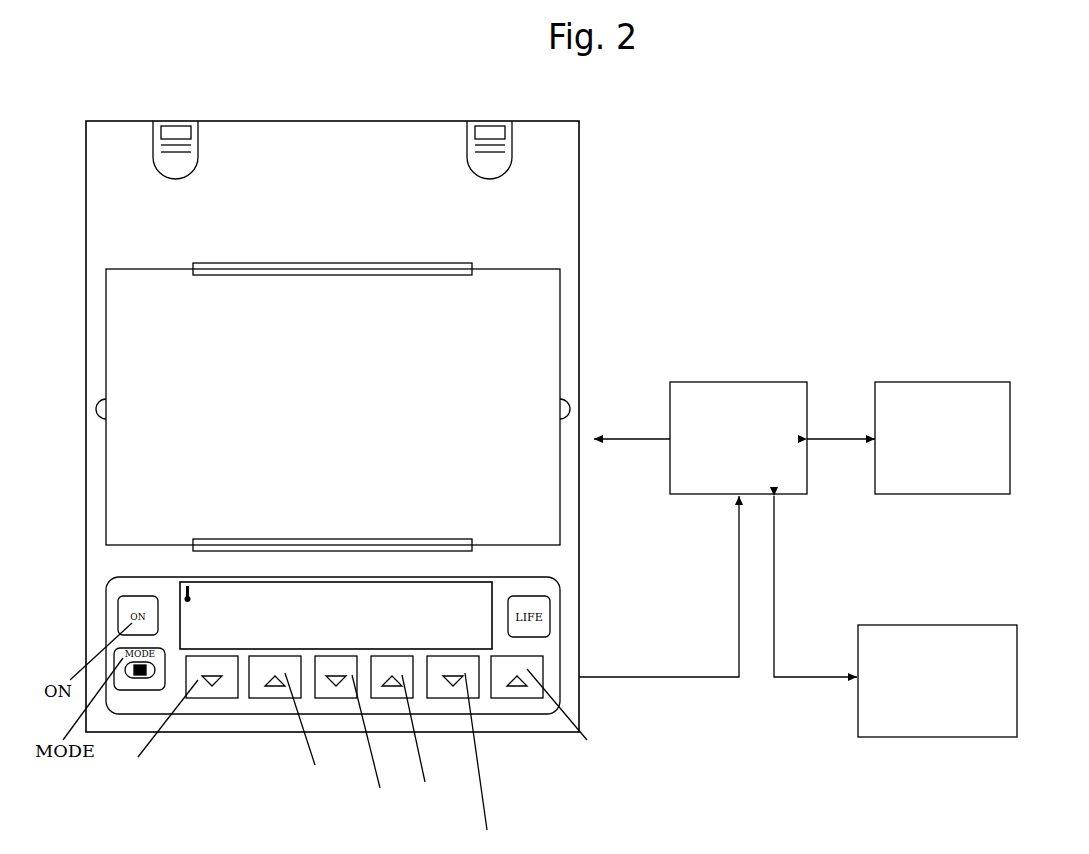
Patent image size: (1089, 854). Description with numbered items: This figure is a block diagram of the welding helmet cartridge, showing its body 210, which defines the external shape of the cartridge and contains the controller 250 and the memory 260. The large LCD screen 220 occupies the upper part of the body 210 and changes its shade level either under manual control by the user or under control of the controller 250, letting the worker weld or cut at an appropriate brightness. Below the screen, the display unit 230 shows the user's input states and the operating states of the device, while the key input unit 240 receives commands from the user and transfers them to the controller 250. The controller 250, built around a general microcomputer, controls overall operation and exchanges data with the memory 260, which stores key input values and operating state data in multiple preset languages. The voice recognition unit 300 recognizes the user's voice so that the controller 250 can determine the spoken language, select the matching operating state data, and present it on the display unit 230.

The body 210 is at (559, 219).
The LCD screen 220 is at (530, 418).
The display unit 230 is at (312, 630).
The key input unit 240 is at (473, 699).
The controller 250 is at (741, 379).
The memory 260 is at (946, 377).
The voice recognition unit 300 is at (1004, 622).